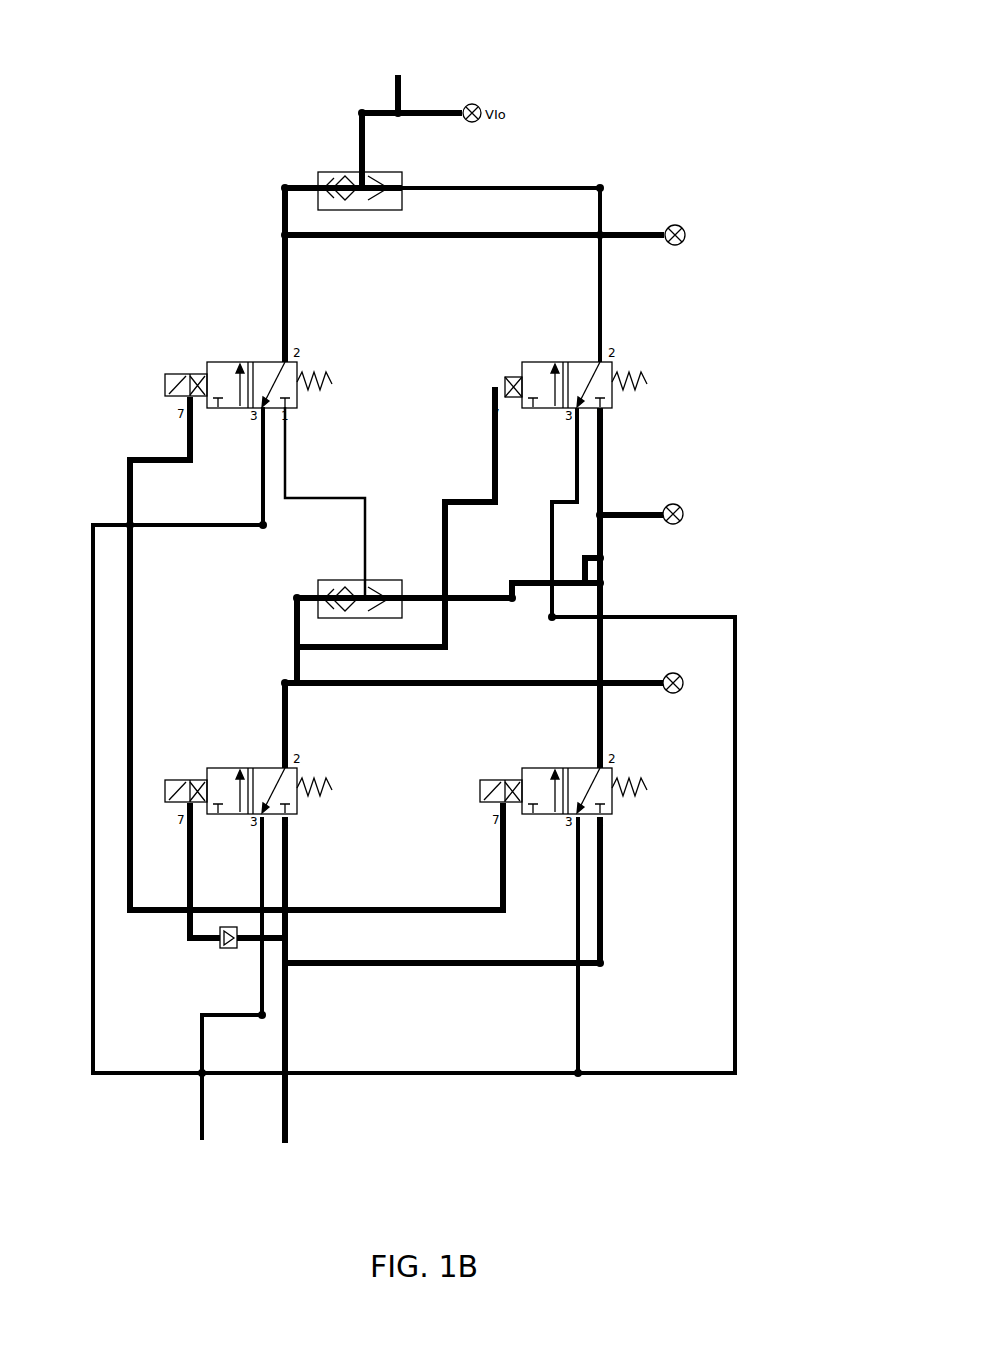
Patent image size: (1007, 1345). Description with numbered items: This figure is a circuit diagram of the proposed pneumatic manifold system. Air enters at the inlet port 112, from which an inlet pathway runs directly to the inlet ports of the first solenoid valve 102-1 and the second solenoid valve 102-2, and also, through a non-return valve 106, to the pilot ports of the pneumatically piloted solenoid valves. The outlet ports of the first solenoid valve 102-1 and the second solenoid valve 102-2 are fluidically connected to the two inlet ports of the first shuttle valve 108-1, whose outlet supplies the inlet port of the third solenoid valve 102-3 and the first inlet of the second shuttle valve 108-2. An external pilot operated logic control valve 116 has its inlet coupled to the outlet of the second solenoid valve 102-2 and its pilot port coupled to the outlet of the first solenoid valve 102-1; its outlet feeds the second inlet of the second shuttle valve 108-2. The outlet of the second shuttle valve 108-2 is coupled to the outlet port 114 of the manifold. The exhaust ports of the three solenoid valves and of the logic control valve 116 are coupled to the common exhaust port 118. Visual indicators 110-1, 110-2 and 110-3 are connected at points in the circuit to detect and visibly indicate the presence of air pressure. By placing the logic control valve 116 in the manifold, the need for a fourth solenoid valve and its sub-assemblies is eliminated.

The first solenoid valve 102-1 is at (263, 763).
The second solenoid valve 102-2 is at (642, 789).
The third solenoid valve 102-3 is at (200, 336).
The non-return valve 106 is at (218, 947).
The first shuttle valve 108-1 is at (318, 594).
The second shuttle valve 108-2 is at (428, 162).
The visual indicator 110-1 is at (715, 677).
The visual indicator 110-2 is at (715, 507).
The visual indicator 110-3 is at (712, 227).
The inlet port 112 is at (326, 1150).
The outlet port 114 is at (443, 55).
The logic control valve 116 is at (642, 381).
The exhaust port 118 is at (144, 1150).